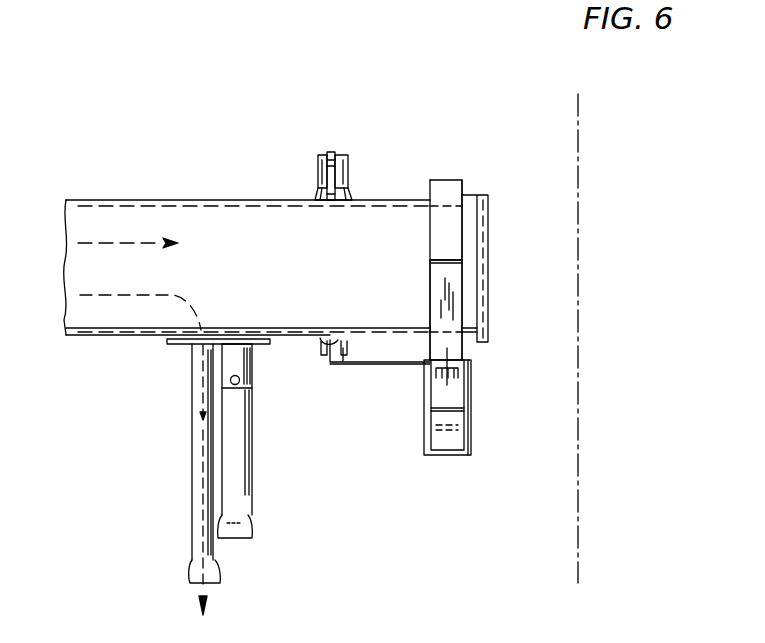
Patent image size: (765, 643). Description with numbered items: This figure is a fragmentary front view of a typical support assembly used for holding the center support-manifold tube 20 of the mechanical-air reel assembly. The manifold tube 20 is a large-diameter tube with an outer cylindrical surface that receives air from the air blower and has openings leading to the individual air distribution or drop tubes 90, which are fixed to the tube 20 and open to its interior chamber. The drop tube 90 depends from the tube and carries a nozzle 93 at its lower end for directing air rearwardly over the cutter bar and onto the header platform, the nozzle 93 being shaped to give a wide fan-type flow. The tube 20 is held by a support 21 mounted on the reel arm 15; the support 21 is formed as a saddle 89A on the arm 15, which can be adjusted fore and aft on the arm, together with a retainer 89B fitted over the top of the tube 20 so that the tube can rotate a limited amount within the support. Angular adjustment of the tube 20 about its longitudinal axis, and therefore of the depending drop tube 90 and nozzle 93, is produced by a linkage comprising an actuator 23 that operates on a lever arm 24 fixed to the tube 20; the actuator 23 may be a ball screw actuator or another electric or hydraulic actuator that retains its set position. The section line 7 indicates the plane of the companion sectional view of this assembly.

The center support-manifold tube 20 is at (227, 210).
The actuator 23 is at (313, 197).
The lever arm 24 is at (358, 196).
The retainer 89B is at (452, 180).
The saddle 89A is at (452, 326).
The support 21 is at (462, 190).
The reel arm 15 is at (471, 400).
The air distribution or drop tube 90 is at (222, 428).
The nozzle 93 is at (222, 577).
The section line 7- 7 is at (520, 94).